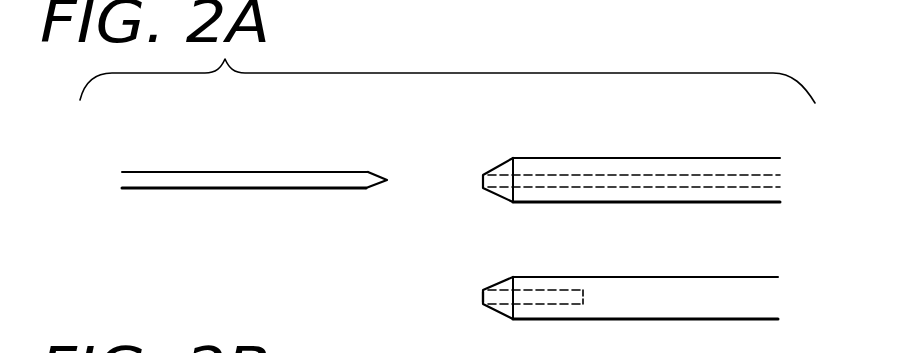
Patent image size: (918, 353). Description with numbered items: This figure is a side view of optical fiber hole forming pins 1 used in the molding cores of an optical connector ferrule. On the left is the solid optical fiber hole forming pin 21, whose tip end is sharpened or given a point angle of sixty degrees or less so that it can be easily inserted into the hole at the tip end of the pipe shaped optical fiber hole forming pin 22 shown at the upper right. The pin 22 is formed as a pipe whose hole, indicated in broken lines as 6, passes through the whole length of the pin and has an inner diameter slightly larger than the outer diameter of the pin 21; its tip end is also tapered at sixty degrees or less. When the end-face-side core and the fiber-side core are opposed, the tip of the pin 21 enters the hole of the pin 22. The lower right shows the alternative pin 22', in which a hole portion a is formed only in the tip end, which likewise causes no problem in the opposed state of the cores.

The optical fiber hole forming pin 1 is at (178, 180).
The optical fiber hole forming pin 21 is at (254, 186).
The pipe shaped optical fiber hole forming pin 22 is at (631, 148).
The pin 22' is at (630, 266).
The inner wire inserted in tube 6 is at (558, 167).
The hole portion a is at (483, 297).